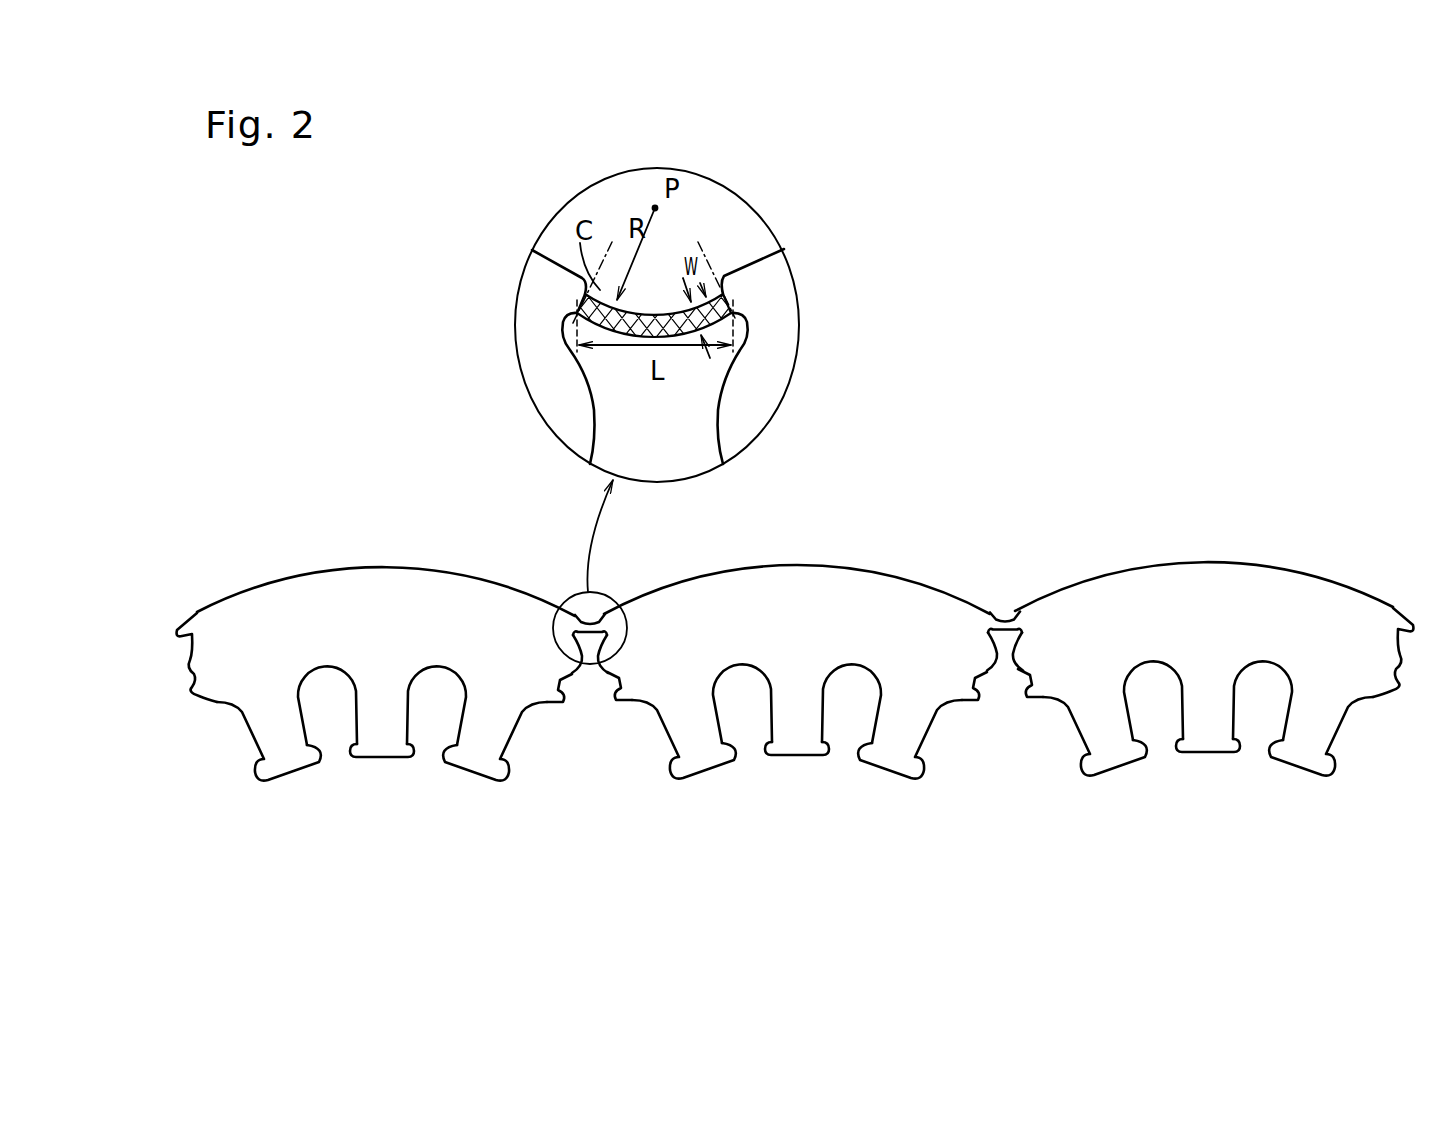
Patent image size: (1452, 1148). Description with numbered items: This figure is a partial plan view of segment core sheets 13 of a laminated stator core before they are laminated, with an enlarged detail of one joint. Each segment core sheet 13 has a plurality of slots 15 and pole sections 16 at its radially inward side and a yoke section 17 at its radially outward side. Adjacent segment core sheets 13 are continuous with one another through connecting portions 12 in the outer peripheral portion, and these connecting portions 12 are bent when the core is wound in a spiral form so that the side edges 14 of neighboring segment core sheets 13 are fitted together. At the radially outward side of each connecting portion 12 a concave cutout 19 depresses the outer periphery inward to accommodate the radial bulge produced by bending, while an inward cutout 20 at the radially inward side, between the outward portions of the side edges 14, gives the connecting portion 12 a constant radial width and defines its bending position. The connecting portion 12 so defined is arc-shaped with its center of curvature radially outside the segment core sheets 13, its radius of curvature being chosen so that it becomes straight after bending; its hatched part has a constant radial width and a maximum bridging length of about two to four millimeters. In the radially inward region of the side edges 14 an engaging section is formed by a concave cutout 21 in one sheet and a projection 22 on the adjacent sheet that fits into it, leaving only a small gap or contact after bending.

The connecting portion 12 is at (721, 277).
The segment core sheet 13 is at (422, 614).
The side edge 14 is at (601, 672).
The slot 15 is at (333, 738).
The pole section 16 is at (288, 753).
The yoke section 17 is at (310, 618).
The concave cutout 19 is at (655, 304).
The inward cutout 20 is at (683, 400).
The concave cutout 21 is at (577, 686).
The projection 22 is at (607, 680).